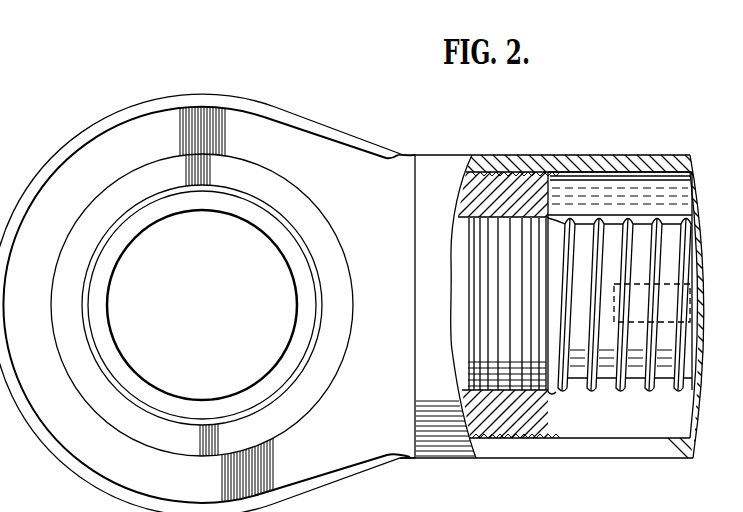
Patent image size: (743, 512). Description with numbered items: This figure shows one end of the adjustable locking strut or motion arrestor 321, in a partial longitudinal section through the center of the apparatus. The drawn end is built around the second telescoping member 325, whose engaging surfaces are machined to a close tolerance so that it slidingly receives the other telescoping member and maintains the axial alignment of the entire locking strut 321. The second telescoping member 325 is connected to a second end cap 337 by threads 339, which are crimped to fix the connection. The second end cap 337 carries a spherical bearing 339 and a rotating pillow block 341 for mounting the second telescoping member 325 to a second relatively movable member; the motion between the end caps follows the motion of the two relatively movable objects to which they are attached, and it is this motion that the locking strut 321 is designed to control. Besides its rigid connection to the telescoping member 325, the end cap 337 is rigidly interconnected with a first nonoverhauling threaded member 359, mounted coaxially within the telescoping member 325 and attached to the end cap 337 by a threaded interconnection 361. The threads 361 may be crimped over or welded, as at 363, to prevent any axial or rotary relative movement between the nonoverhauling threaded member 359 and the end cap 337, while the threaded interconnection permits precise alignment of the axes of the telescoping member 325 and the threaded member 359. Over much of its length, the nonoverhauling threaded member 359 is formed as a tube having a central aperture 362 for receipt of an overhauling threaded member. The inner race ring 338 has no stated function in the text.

The adjustable locking strut 321 is at (455, 143).
The second telescoping member 325 is at (596, 164).
The second end cap 337 is at (316, 157).
The bearing race 338 is at (297, 218).
The threads 339 is at (517, 200).
The rotating pillow block 341 is at (130, 232).
The first nonoverhauling threaded member 359 is at (641, 228).
The threaded interconnection 361 is at (492, 222).
The central aperture 362 is at (691, 298).
The weld 363 is at (553, 393).